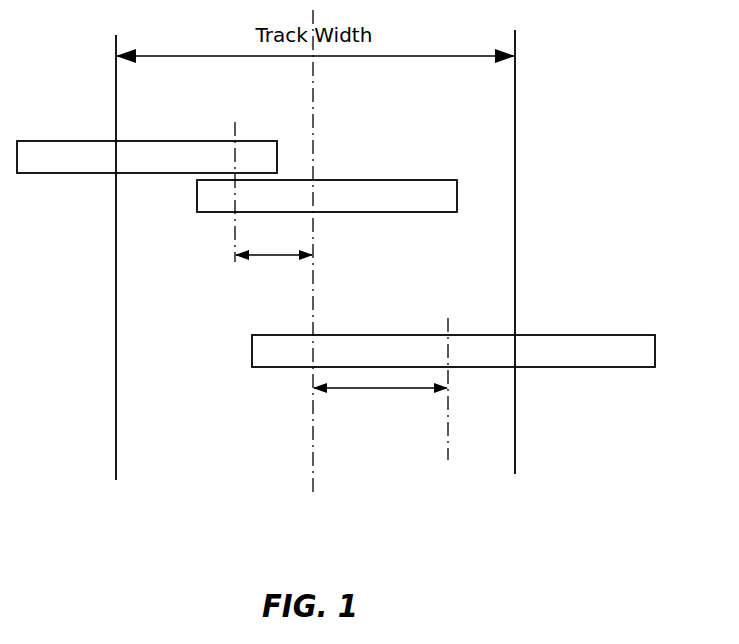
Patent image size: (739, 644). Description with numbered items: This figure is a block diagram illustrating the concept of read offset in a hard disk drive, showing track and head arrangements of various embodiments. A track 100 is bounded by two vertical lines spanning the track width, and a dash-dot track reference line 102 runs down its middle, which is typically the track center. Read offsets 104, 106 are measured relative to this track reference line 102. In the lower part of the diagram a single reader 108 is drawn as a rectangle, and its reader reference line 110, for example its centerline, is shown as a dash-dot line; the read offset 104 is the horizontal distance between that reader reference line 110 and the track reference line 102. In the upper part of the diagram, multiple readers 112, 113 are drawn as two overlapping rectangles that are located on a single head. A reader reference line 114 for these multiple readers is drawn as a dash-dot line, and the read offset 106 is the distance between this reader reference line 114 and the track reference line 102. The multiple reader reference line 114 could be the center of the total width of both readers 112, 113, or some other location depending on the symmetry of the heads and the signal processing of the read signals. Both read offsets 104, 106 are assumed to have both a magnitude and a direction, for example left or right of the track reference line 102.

The track 100 is at (125, 341).
The track reference line 102 is at (312, 438).
The read offset 104 is at (420, 392).
The read offset 106 is at (277, 252).
The single reader 108 is at (411, 342).
The reader reference line 110 is at (448, 458).
The reader 112 is at (162, 142).
The reader 113 is at (376, 181).
The reader reference line 114 is at (235, 232).